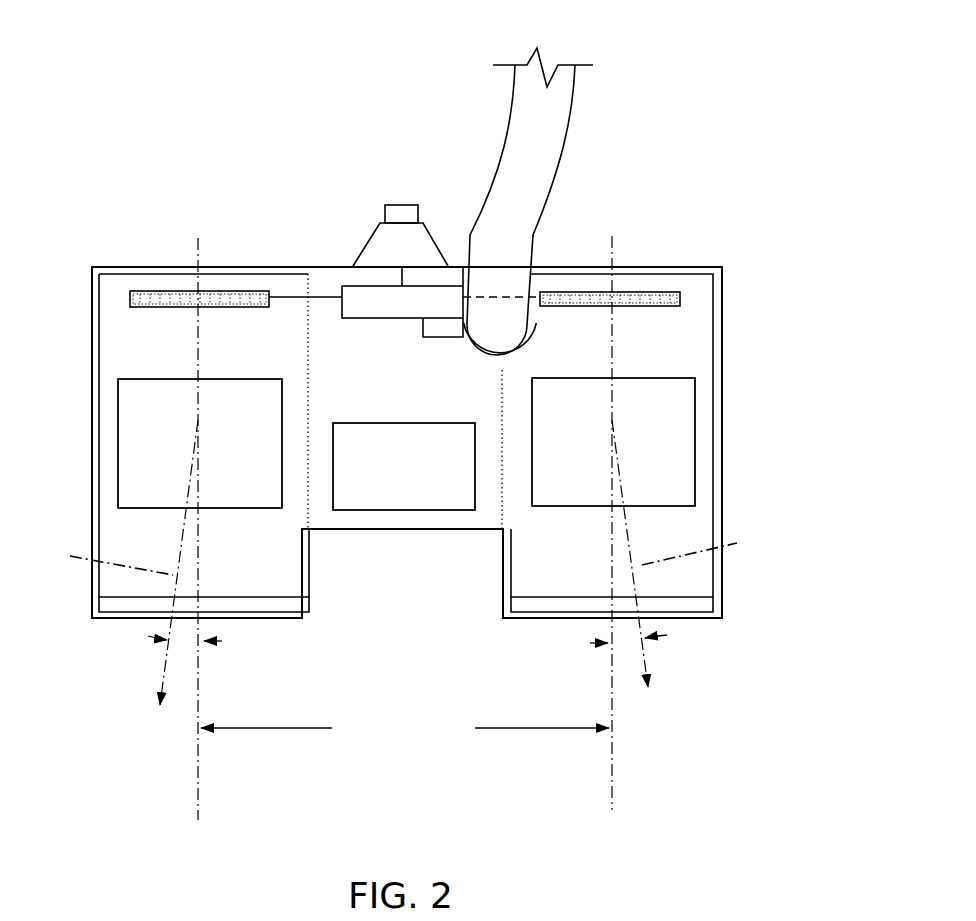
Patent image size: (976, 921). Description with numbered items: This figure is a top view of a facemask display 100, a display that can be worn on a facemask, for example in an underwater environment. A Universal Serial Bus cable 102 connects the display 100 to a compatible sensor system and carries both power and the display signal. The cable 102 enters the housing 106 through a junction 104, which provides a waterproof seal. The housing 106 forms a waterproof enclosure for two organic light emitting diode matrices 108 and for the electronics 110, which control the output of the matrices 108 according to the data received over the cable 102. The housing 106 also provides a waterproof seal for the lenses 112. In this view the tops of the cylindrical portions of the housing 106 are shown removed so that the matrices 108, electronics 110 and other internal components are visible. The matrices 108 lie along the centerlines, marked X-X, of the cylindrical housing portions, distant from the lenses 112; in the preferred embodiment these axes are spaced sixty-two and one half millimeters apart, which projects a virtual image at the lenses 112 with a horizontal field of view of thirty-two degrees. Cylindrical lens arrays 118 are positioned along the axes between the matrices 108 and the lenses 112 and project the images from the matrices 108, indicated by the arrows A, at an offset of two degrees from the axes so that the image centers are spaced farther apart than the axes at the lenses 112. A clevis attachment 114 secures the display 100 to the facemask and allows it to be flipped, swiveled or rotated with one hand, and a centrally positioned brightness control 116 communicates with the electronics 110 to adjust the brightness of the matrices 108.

The facemask display 100 is at (170, 108).
The Universal Serial Bus (USB) cable 102 is at (570, 125).
The junction 104 is at (535, 345).
The housing 106 is at (128, 265).
The organic light emitting diode (OLED) matrices 108 is at (243, 291).
The electronics 110 is at (349, 286).
The lenses 112 is at (117, 613).
The clevis attachment 114 is at (417, 510).
The brightness control 116 is at (403, 207).
The cylindrical lens arrays 118 is at (118, 448).